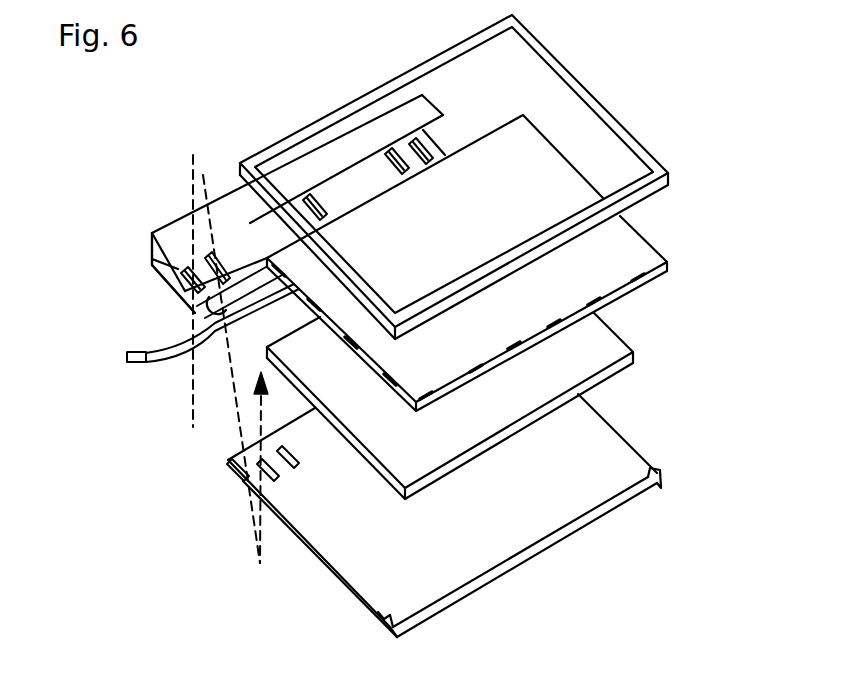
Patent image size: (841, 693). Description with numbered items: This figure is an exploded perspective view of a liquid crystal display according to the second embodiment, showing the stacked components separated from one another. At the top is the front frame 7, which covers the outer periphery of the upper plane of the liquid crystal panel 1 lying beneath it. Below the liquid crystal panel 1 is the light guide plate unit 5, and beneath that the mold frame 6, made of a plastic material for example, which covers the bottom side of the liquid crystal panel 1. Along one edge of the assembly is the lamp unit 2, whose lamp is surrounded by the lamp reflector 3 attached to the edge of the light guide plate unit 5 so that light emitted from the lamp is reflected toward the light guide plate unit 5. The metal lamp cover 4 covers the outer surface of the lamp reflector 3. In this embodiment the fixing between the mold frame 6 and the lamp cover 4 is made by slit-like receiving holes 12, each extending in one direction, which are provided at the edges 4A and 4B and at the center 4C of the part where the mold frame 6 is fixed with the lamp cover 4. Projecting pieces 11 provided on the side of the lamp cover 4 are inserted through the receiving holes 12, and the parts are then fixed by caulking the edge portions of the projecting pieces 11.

The liquid crystal panel 1 is at (628, 264).
The lamp unit 2 is at (247, 335).
The lamp reflector 3 is at (192, 308).
The lamp cover 4 is at (228, 218).
The edge of lamp cover fixing part 4A is at (182, 292).
The edge of lamp cover fixing part 4B is at (430, 145).
The center of lamp cover fixing part 4C is at (325, 199).
The light guide plate unit 5 is at (608, 355).
The mold frame 6 is at (658, 473).
The front frame 7 is at (663, 165).
The projecting pieces 11 is at (186, 292).
The slit-like receiving hole 12 is at (233, 460).